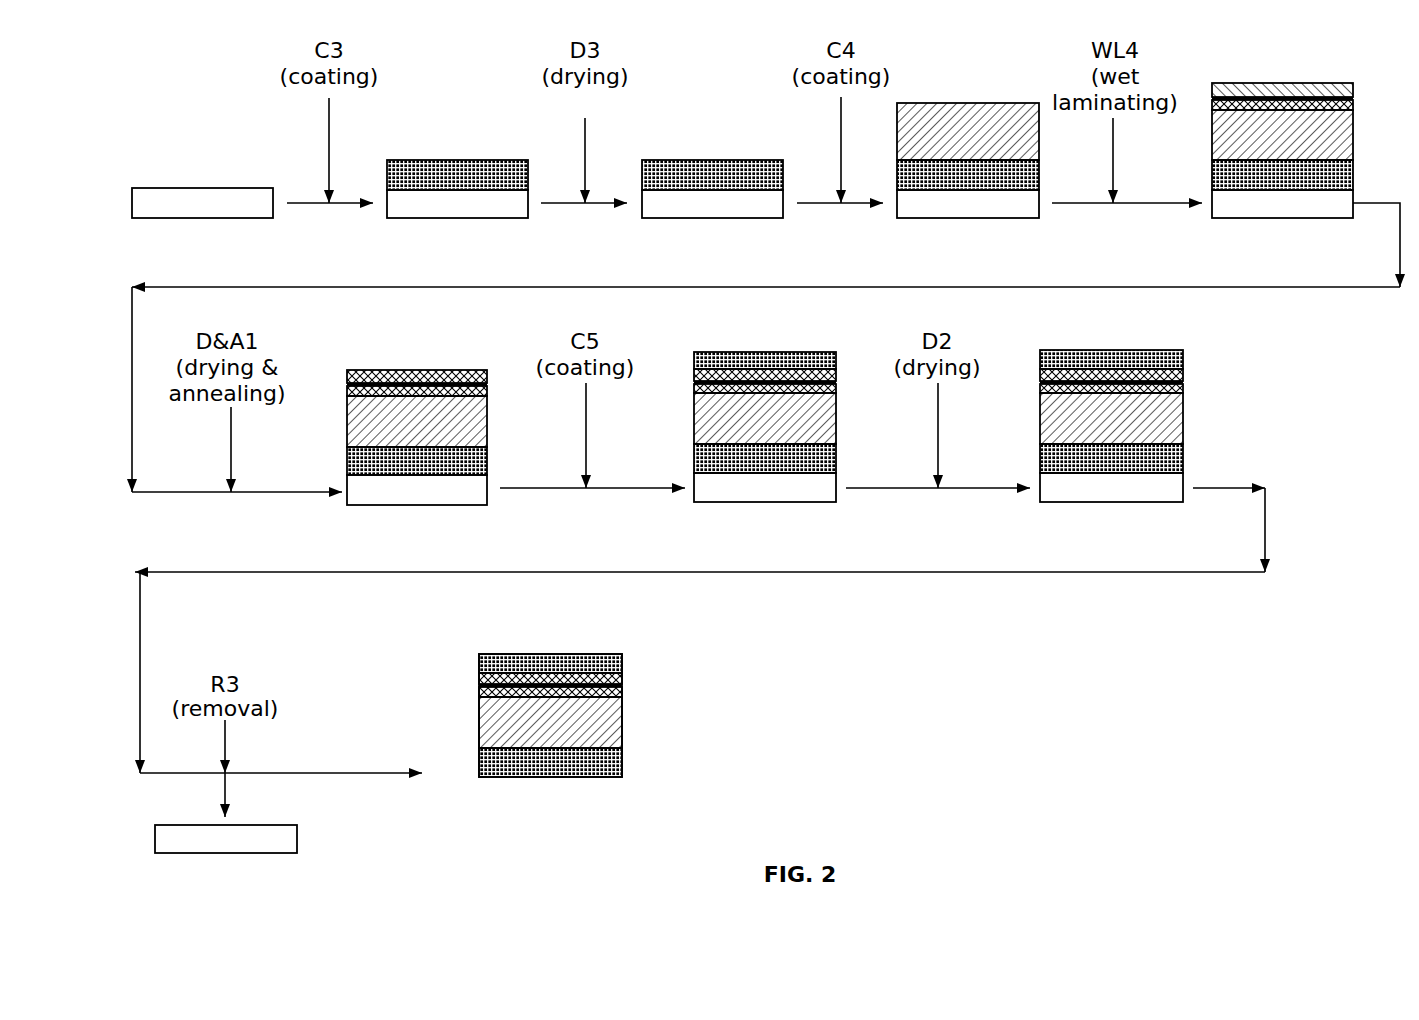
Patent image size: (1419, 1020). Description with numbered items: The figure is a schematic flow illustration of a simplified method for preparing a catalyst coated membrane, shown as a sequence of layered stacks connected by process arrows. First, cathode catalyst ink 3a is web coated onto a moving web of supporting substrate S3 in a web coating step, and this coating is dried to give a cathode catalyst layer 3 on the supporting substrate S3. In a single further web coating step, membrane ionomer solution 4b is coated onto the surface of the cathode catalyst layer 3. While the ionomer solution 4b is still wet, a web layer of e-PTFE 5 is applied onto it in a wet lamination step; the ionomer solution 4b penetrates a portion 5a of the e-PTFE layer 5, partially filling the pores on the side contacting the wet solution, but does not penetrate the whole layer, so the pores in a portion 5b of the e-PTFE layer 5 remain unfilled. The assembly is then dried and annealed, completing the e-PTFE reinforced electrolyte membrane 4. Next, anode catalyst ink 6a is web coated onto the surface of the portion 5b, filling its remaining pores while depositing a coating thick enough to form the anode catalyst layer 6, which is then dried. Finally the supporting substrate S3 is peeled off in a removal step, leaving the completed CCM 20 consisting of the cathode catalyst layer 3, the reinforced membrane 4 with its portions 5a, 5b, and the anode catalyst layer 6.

The supporting substrate S3 is at (230, 199).
The cathode catalyst ink 3a is at (493, 163).
The cathode catalyst layer 3 is at (745, 163).
The membrane ionomer solution 4b is at (977, 109).
The e-PTFE reinforced electrolyte membrane 4 is at (474, 433).
The portion of e-PTFE layer 5a is at (1353, 105).
The portion of e-PTFE layer 5b is at (1353, 87).
The e-PTFE layer 5 is at (1208, 98).
The anode catalyst ink 6a is at (823, 354).
The anode catalyst layer 6 is at (1168, 353).
The CCM 20 is at (679, 681).